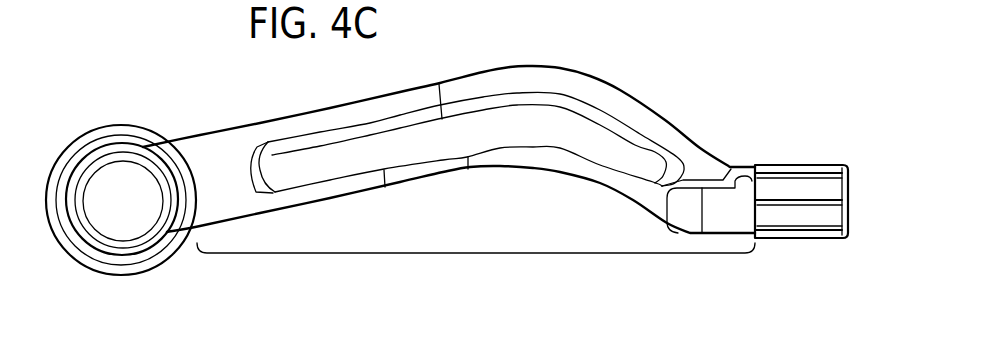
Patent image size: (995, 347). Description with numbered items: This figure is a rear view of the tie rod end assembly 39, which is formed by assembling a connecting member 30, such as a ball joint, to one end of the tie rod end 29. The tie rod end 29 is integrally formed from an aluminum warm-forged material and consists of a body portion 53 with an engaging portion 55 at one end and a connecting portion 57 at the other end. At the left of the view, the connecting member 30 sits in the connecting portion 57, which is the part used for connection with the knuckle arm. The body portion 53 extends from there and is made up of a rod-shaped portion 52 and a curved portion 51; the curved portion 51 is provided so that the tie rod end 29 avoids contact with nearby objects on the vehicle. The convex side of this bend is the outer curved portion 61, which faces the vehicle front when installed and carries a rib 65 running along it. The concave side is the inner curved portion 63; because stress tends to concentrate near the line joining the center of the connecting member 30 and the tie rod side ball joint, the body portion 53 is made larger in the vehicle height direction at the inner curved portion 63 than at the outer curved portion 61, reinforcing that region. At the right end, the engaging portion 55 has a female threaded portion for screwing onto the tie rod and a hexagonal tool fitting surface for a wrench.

The tie rod end 29 is at (675, 97).
The connecting member 30 is at (123, 124).
The tie rod end assembly 39 is at (683, 42).
The curved portion 51 is at (602, 97).
The rod-shaped portion 52 is at (350, 116).
The body portion 53 is at (476, 270).
The engaging portion 55 is at (798, 192).
The connecting portion 57 is at (122, 243).
The outer curved portion 61 is at (573, 72).
The inner curved portion 63 is at (528, 157).
The rib 65 is at (555, 158).